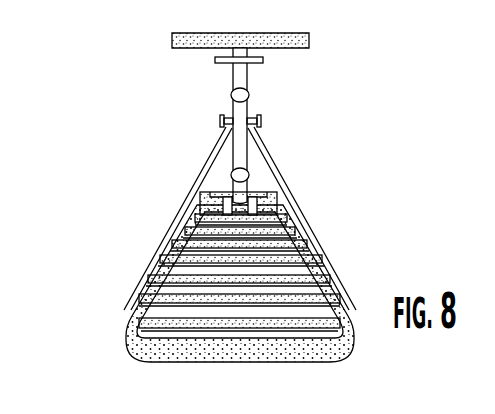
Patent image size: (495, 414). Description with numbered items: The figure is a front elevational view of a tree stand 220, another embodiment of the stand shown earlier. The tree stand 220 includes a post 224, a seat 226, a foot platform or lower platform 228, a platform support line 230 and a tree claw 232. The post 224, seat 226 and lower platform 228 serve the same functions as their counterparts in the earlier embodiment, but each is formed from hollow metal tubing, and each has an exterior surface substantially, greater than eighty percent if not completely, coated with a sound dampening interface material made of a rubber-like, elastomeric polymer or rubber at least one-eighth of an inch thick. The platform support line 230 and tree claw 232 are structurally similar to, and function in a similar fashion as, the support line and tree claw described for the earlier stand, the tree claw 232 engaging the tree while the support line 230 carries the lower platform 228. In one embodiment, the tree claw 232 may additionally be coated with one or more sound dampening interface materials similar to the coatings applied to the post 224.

The tree stand 220 is at (123, 295).
The post 224 is at (232, 95).
The seat 226 is at (305, 40).
The lower platform 228 is at (338, 348).
The platform support line 230 is at (190, 200).
The tree claw 232 is at (215, 60).